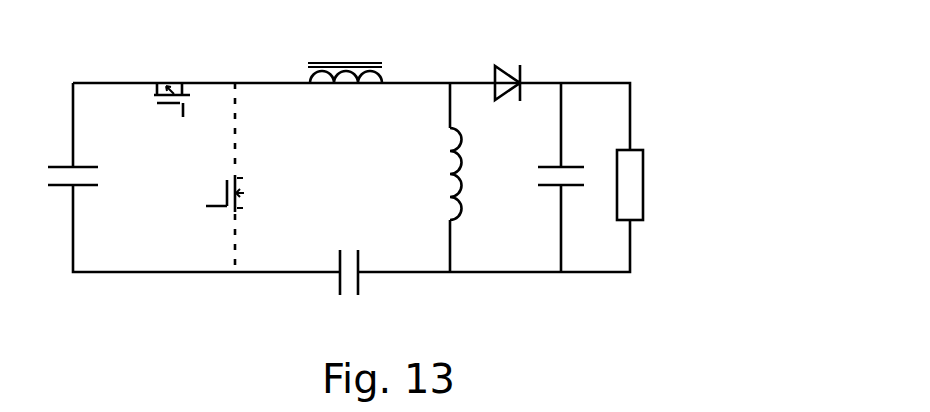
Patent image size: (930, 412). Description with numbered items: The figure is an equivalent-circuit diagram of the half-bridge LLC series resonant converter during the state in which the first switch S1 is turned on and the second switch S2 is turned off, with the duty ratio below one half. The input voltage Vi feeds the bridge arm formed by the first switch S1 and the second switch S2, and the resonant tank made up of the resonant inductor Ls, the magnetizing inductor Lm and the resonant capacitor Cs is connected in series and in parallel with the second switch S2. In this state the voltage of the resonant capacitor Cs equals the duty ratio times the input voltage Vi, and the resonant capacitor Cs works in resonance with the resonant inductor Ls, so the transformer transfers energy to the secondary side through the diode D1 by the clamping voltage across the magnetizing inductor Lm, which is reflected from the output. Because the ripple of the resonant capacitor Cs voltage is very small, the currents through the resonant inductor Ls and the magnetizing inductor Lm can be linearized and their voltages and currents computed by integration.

The input voltage Vi is at (73, 114).
The first switch S1 is at (171, 80).
The second switch S2 is at (199, 177).
The resonant inductor Ls is at (345, 57).
The magnetizing inductor Lm is at (429, 174).
The diode D1 is at (505, 69).
The resonant capacitor Cs is at (341, 259).